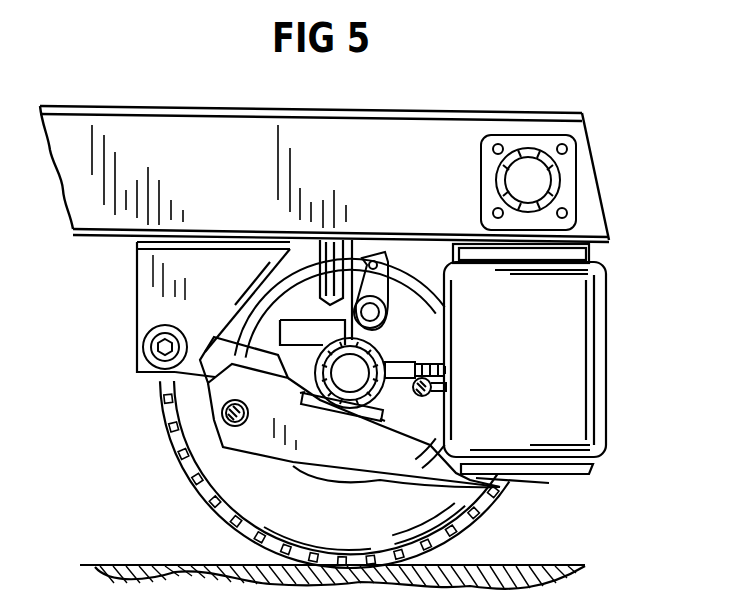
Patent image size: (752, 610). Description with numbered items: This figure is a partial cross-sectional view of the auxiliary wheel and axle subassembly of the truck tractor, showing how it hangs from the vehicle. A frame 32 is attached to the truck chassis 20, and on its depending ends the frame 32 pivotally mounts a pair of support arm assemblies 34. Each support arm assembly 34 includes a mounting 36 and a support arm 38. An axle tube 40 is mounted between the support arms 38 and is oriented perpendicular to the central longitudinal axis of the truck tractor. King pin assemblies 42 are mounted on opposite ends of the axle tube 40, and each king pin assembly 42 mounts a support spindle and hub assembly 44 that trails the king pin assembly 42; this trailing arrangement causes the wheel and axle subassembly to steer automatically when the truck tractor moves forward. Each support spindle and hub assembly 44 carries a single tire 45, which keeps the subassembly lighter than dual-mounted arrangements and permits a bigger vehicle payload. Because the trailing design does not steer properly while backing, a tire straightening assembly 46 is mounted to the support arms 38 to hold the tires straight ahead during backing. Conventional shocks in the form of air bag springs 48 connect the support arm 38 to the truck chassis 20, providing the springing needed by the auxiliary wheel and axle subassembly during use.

The chassis 20 is at (117, 128).
The frame 32 is at (133, 265).
The support arm assembly 34 is at (237, 462).
The mounting 36 is at (160, 370).
The support arm 38 is at (505, 488).
The axle tube 40 is at (370, 420).
The king pin assembly 42 is at (293, 330).
The support spindle and hub assembly 44 is at (388, 360).
The tire 45 is at (478, 517).
The tire straightening assembly 46 is at (220, 417).
The air bag spring 48 is at (553, 332).